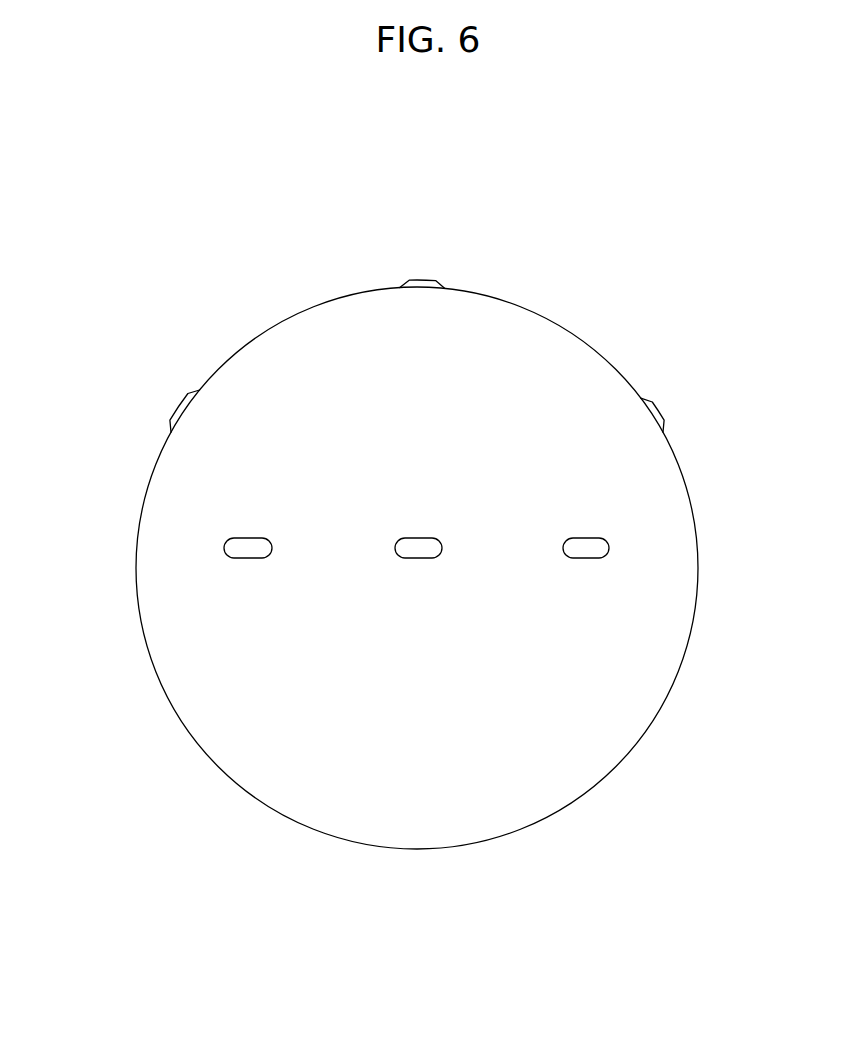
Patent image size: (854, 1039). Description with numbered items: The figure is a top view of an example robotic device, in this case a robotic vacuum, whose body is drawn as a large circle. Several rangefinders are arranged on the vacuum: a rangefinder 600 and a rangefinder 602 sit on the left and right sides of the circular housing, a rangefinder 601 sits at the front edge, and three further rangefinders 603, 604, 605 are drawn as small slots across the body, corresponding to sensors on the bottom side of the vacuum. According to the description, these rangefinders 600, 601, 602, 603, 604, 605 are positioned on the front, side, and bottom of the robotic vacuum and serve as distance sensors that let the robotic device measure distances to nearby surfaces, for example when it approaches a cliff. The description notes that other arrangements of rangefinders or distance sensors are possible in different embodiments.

The rangefinder 600 is at (182, 402).
The rangefinder 601 is at (432, 280).
The rangefinder 602 is at (665, 422).
The rangefinder 603 is at (272, 548).
The rangefinder 604 is at (468, 522).
The rangefinder 605 is at (609, 545).